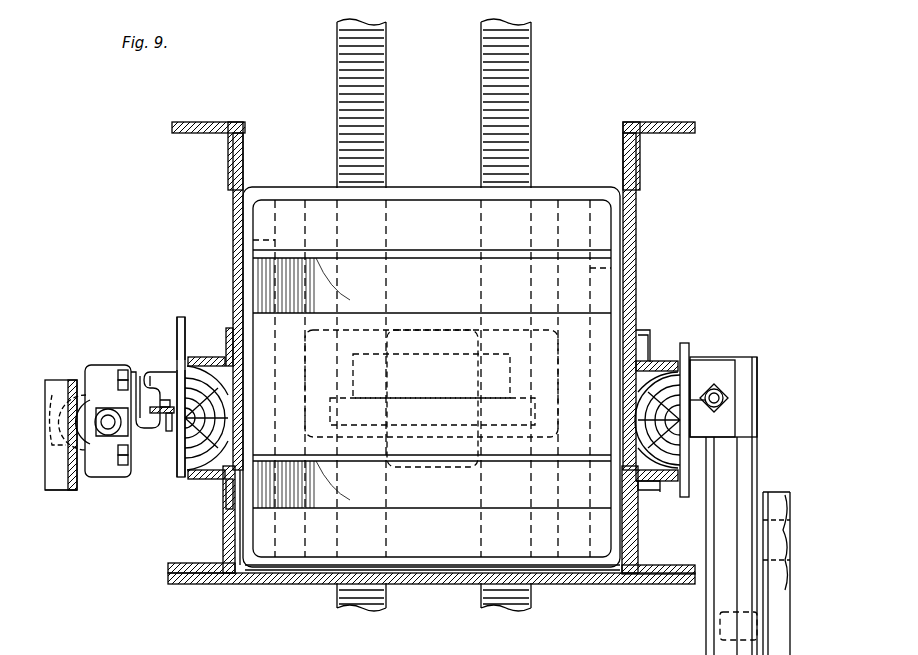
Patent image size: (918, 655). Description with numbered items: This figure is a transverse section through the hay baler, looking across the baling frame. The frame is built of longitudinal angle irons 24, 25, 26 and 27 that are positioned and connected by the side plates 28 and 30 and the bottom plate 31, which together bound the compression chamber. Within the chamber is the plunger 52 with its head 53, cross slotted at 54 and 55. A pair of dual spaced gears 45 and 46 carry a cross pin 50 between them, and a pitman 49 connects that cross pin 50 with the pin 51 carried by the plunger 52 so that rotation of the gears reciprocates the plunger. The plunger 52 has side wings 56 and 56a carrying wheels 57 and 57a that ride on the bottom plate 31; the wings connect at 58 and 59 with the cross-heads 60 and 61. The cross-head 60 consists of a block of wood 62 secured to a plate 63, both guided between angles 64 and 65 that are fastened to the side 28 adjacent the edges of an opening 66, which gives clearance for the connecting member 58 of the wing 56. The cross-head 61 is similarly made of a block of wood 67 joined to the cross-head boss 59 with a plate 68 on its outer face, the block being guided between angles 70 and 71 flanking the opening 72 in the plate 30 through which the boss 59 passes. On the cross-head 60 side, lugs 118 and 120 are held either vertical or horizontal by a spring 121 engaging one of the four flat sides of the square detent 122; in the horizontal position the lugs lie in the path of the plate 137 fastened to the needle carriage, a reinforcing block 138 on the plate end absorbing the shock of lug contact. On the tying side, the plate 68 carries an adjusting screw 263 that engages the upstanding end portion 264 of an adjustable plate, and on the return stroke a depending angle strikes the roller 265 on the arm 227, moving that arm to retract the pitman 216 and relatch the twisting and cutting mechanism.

The longitudinal angle iron 24 is at (200, 121).
The longitudinal angle iron 25 is at (185, 566).
The longitudinal angle iron 26 is at (657, 586).
The longitudinal angle iron 27 is at (666, 121).
The side plate 28 is at (232, 218).
The side plate 30 is at (638, 234).
The bottom plate 31 is at (306, 588).
The dual spaced gear 45 is at (345, 92).
The dual spaced gear 46 is at (522, 76).
The pitman 49 is at (450, 432).
The cross pin 50 is at (362, 440).
The pin 51 is at (430, 358).
The plunger 52 is at (422, 186).
The head 53 is at (310, 205).
The cross slot 54 is at (540, 262).
The cross slot 55 is at (515, 500).
The side wing 56 is at (252, 241).
The side wing 56a is at (612, 268).
The wheel 57 is at (256, 586).
The wheel 57a is at (603, 586).
The connecting member 58 is at (225, 476).
The cross-head boss 59 is at (652, 380).
The cross-head 60 is at (170, 320).
The cross-head 61 is at (690, 343).
The block of wood 62 is at (178, 358).
The plate 63 is at (180, 316).
The angle 64 is at (205, 356).
The angle 65 is at (195, 472).
The opening 66 is at (229, 338).
The block of wood 67 is at (740, 450).
The plate 68 is at (706, 375).
The angle 70 is at (630, 360).
The angle 71 is at (655, 490).
The opening 72 is at (642, 360).
The lug 118 is at (98, 364).
The lug 120 is at (110, 472).
The spring 121 is at (154, 384).
The square detent 122 is at (104, 436).
The plate 137 is at (68, 394).
The reinforcing block 138 is at (60, 490).
The pitman 216 is at (716, 496).
The arm 227 is at (770, 590).
The adjusting screw 263 is at (732, 392).
The upstanding end portion 264 is at (716, 362).
The roller 265 is at (722, 641).